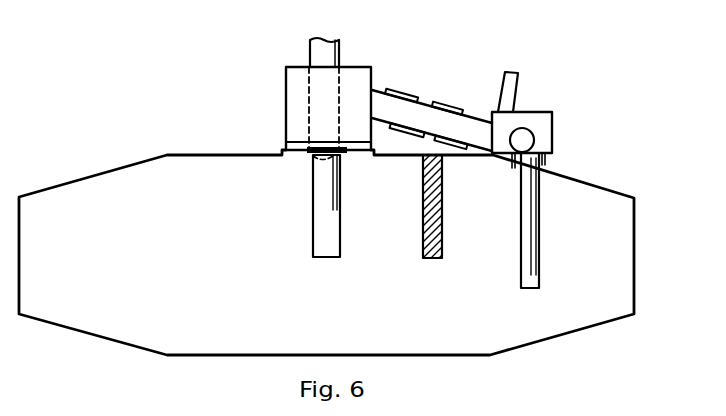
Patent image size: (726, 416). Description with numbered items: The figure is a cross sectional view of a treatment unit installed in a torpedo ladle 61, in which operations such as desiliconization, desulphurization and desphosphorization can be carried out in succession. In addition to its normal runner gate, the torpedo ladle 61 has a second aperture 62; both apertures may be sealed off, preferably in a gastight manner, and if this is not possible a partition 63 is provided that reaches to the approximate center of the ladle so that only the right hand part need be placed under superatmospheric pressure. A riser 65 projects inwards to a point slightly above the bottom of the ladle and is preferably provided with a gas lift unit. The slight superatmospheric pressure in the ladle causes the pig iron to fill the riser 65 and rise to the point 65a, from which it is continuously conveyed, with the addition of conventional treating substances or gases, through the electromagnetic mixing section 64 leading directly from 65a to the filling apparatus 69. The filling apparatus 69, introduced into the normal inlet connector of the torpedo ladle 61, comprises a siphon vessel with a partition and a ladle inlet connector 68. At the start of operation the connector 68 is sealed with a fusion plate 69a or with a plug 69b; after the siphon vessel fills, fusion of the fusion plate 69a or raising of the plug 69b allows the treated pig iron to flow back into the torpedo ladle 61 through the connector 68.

The torpedo ladle 61 is at (267, 198).
The second aperture 62 is at (548, 166).
The partition 63 is at (423, 238).
The electromagnetic mixing section 64 is at (420, 108).
The riser 65 is at (528, 256).
The upper end of riser 65a is at (538, 122).
The ladle inlet connector 68 is at (326, 218).
The filling apparatus 69 is at (292, 97).
The fusion plate 69a is at (343, 152).
The plug 69b is at (316, 52).